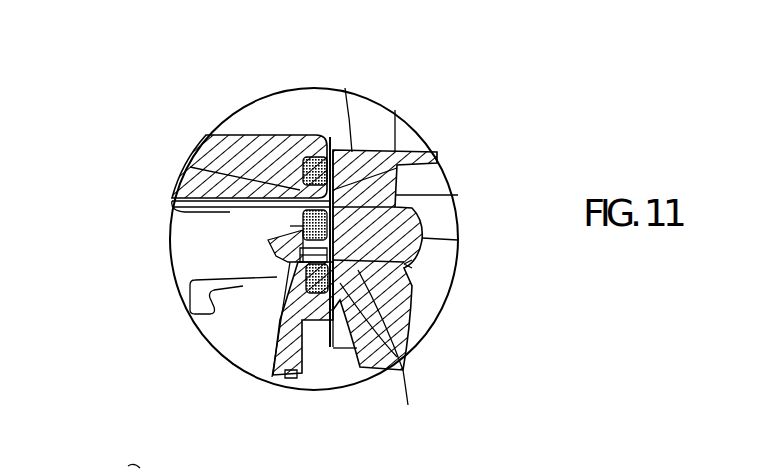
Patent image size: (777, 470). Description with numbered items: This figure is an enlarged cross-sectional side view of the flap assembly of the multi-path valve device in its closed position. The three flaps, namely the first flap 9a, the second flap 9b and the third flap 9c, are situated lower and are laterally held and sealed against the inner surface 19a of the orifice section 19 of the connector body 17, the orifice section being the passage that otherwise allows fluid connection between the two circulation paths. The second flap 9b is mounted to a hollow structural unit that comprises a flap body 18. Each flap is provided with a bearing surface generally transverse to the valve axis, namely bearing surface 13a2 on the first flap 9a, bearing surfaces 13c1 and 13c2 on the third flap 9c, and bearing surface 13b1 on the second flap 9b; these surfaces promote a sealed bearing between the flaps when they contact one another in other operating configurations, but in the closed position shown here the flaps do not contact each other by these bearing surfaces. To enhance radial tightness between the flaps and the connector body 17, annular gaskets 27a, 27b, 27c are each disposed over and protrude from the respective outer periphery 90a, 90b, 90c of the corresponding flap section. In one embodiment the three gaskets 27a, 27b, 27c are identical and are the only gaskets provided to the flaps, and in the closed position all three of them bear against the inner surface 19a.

The first flap 9a is at (313, 195).
The second flap 9b is at (298, 258).
The third flap 9c is at (313, 193).
The bearing surface 13a2 is at (177, 208).
The bearing surface 13b1 is at (287, 230).
The bearing surface 13c1 is at (437, 158).
The bearing surface 13c2 is at (287, 232).
The connector body 17 is at (404, 264).
The flap body 18 is at (302, 373).
The orifice section 19 is at (422, 238).
The inner surface 19a is at (458, 195).
The gasket 27a is at (340, 155).
The gasket 27b is at (397, 357).
The gasket 27c is at (300, 215).
The outer periphery 90a is at (330, 157).
The outer periphery 90b is at (410, 287).
The outer periphery 90c is at (333, 222).